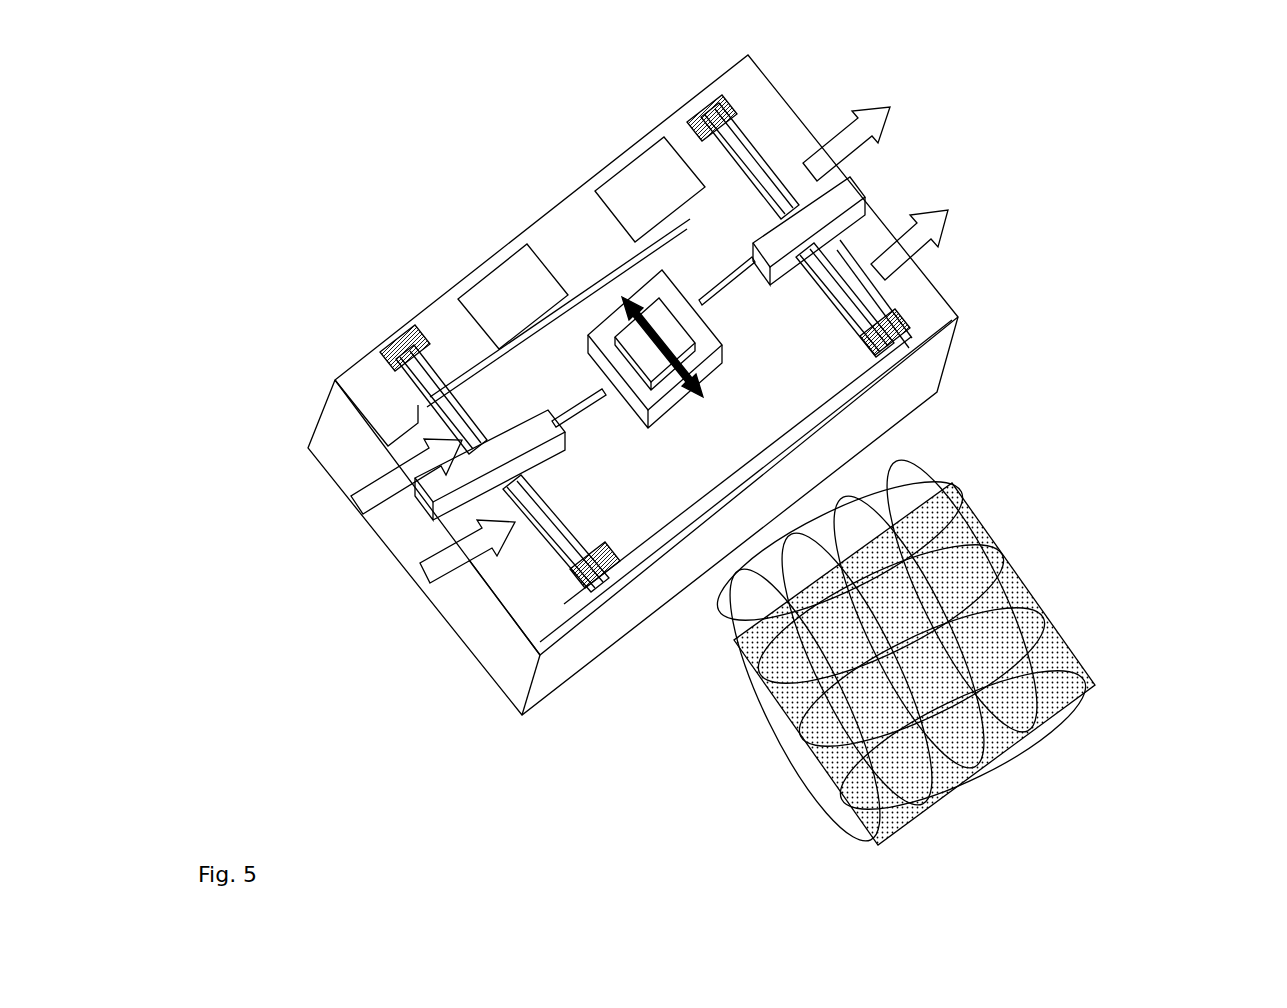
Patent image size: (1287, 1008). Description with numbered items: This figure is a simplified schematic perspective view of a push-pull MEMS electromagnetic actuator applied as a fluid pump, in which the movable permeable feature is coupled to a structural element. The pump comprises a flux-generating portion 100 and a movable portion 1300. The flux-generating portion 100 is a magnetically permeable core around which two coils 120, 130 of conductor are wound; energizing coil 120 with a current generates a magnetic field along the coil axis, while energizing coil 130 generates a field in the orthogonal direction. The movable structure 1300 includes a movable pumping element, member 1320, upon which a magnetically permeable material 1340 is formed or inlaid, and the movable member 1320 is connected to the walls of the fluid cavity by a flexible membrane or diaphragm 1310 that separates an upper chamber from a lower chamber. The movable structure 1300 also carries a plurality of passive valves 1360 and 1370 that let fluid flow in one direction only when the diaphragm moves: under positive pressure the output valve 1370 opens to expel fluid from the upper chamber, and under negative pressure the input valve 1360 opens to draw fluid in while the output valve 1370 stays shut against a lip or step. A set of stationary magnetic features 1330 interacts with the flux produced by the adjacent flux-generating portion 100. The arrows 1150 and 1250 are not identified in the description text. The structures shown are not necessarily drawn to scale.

The flux-generating portion 100 is at (979, 664).
The coil 120 is at (1100, 740).
The coil 130 is at (1010, 800).
The incident light beams 1150 is at (420, 577).
The reflected light beams 1250 is at (940, 185).
The movable portion 1300 is at (1092, 168).
The diaphragm 1310 is at (597, 408).
The movable member 1320 is at (722, 352).
The stationary magnetic features 1330 is at (503, 316).
The magnetically permeable material 1340 is at (657, 383).
The input valve 1360 is at (447, 400).
The output valve 1370 is at (768, 150).